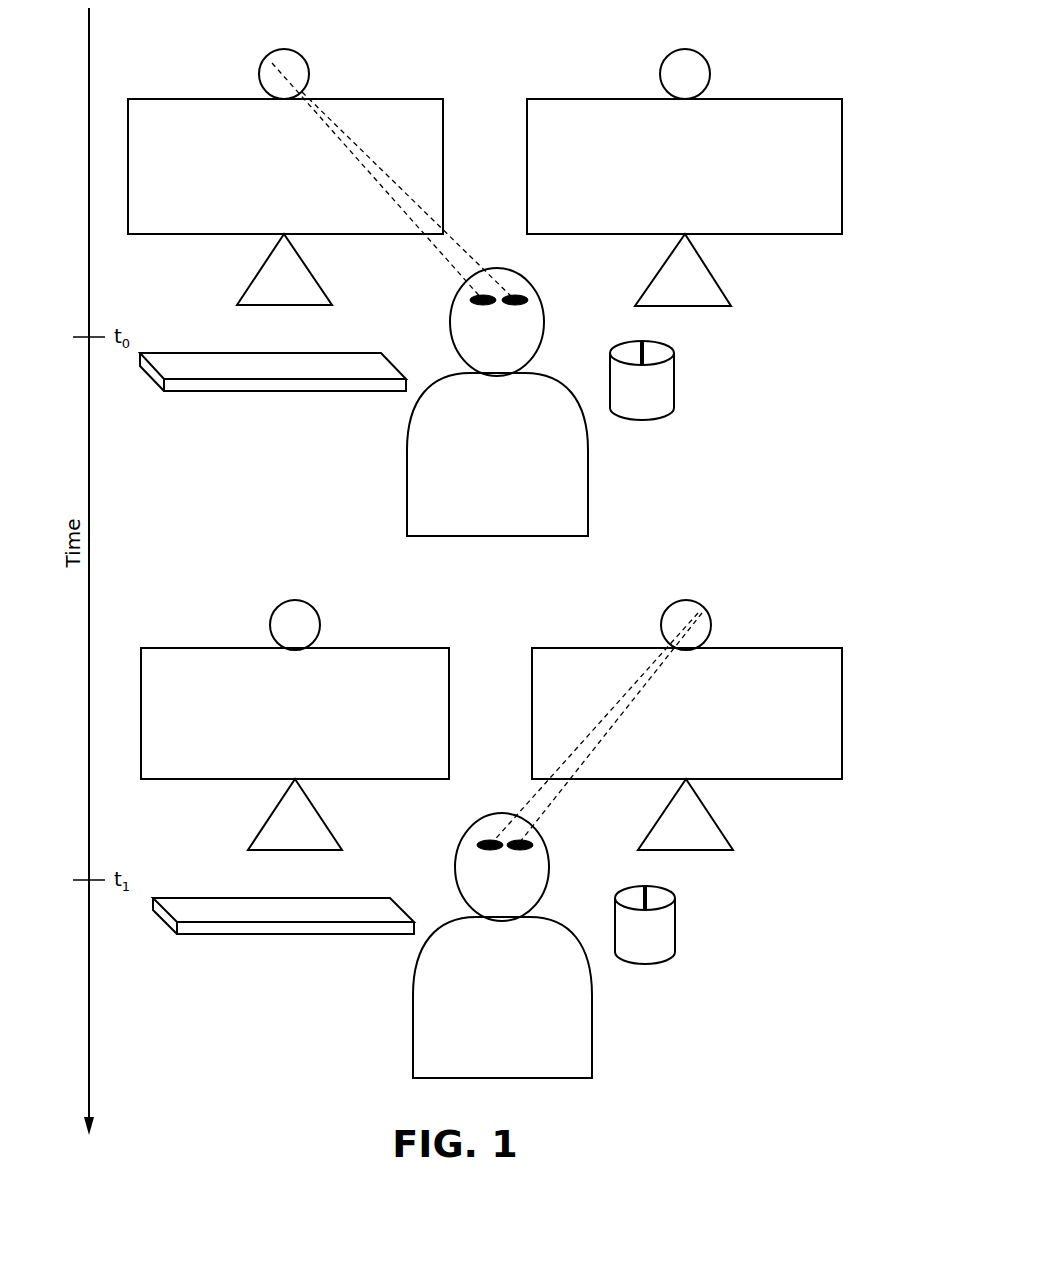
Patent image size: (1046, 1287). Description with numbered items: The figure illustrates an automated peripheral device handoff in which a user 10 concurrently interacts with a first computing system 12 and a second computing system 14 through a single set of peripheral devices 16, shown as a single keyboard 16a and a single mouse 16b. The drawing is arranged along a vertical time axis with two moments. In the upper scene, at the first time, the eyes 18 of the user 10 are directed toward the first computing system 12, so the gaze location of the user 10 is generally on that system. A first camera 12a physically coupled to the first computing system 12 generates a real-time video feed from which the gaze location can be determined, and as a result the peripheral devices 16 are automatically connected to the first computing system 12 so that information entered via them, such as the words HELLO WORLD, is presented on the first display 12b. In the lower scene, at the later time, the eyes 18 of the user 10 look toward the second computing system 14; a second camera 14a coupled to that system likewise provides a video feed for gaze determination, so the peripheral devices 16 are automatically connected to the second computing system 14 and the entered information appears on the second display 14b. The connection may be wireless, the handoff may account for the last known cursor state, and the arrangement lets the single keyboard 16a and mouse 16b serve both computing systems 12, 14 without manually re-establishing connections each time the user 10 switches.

The user 10 is at (408, 447).
The first computing system 12 is at (116, 76).
The first camera 12a is at (304, 68).
The first display 12b is at (385, 99).
The second computing system 14 is at (859, 80).
The second camera 14a is at (693, 68).
The second display 14b is at (608, 99).
The peripheral devices 16 is at (774, 402).
The keyboard 16a is at (277, 391).
The mouse 16b is at (640, 419).
The eyes 18 is at (514, 278).